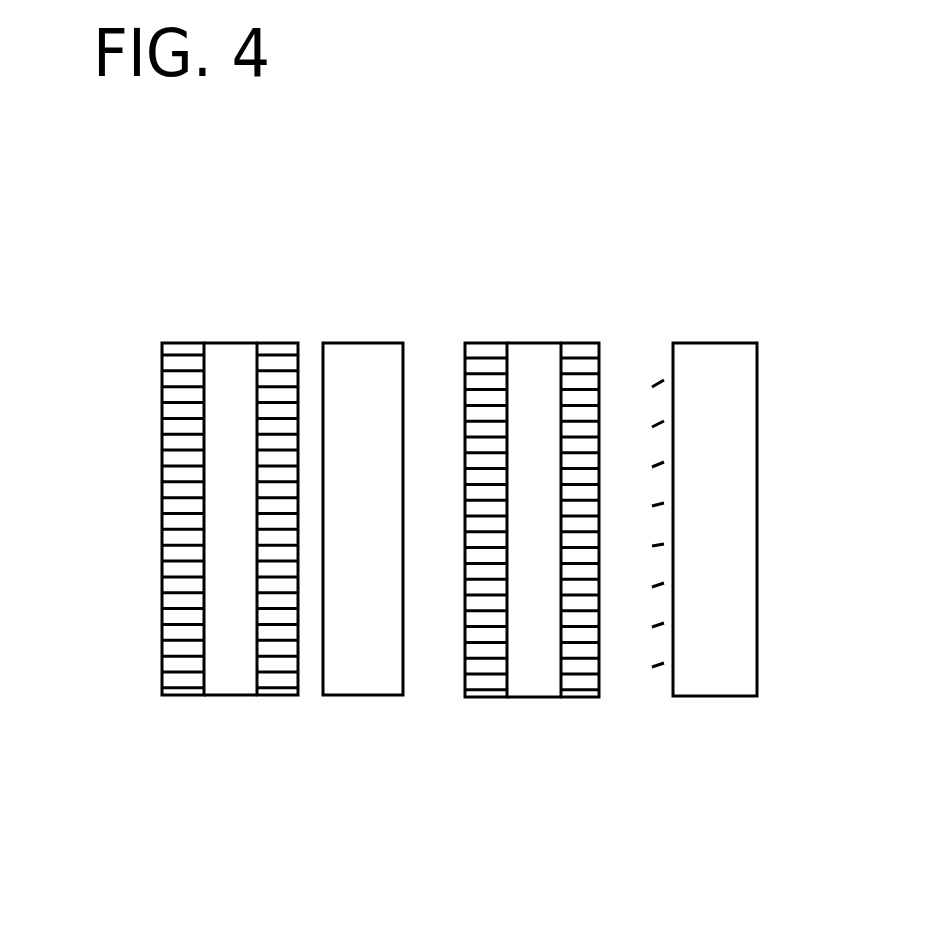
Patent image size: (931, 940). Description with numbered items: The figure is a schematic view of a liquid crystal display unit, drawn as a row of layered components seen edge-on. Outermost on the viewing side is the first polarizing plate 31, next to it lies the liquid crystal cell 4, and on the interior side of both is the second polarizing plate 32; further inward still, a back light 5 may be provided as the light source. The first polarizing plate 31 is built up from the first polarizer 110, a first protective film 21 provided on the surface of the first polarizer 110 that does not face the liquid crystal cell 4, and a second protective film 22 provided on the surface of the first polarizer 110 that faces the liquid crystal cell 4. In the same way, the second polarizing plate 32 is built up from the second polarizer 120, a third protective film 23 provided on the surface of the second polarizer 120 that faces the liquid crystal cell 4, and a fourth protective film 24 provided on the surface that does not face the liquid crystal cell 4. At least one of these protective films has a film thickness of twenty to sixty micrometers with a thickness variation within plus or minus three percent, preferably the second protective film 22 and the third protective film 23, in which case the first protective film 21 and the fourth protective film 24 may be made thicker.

The first polarizer 110 is at (230, 519).
The second polarizer 120 is at (533, 520).
The first protective film 21 is at (180, 697).
The second protective film 22 is at (273, 697).
The third protective film 23 is at (482, 697).
The fourth protective film 24 is at (577, 697).
The first polarizing plate 31 is at (231, 756).
The second polarizing plate 32 is at (533, 758).
The liquid crystal cell 4 is at (360, 697).
The back light 5 is at (707, 683).